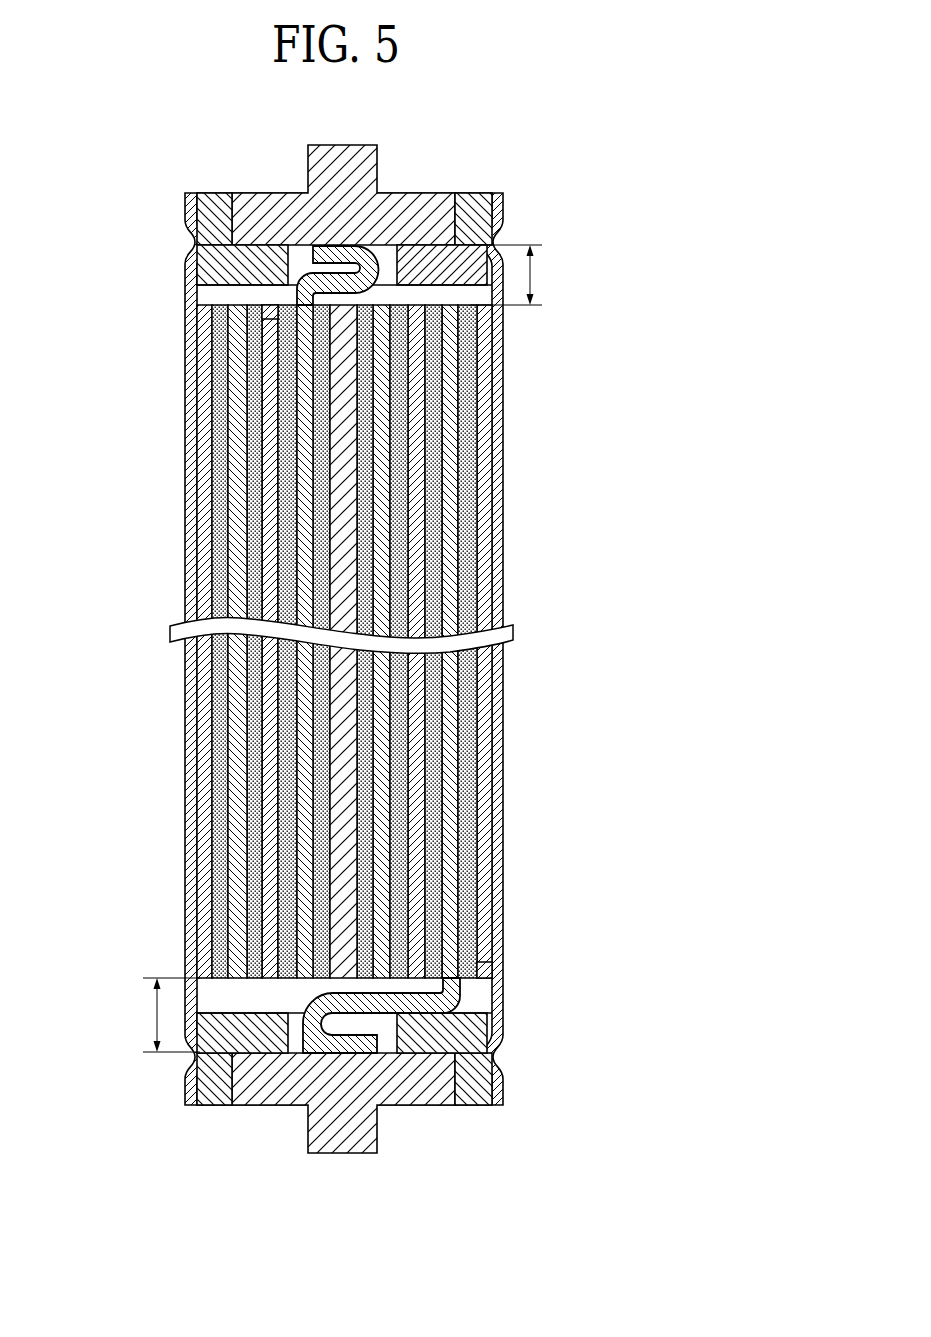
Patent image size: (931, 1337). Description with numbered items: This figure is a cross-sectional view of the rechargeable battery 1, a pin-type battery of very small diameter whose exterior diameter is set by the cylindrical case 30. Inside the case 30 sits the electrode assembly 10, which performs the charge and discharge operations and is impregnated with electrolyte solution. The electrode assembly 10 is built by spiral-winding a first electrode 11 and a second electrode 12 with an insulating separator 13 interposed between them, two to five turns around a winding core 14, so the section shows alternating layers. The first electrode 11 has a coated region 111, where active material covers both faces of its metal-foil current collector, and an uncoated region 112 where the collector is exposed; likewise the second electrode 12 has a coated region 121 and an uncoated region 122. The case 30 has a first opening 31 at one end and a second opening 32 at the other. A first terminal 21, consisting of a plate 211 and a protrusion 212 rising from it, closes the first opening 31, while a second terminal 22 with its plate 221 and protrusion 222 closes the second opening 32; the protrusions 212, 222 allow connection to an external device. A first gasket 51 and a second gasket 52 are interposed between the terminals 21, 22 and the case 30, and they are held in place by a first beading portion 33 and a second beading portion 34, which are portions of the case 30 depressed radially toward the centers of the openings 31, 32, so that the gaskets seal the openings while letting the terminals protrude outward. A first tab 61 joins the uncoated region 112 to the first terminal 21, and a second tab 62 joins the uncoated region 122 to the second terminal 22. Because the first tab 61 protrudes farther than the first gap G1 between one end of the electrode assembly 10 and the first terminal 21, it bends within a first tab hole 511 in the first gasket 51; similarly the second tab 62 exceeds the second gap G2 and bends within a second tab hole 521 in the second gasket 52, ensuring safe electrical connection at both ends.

The rechargeable battery 1 is at (377, 94).
The electrode assembly 10 is at (343, 649).
The first electrode 11 is at (300, 778).
The coated region 111 is at (350, 850).
The uncoated region 112 is at (273, 300).
The second electrode 12 is at (447, 383).
The coated region 121 is at (415, 480).
The uncoated region 122 is at (458, 995).
The separator 13 is at (405, 935).
The winding core 14 is at (343, 677).
The first terminal 21 is at (355, 161).
The plate 211 is at (420, 223).
The protrusion 212 is at (370, 152).
The second terminal 22 is at (355, 1141).
The plate 221 is at (417, 1080).
The protrusion 222 is at (368, 1150).
The case 30 is at (186, 729).
The first opening 31 is at (197, 200).
The second opening 32 is at (203, 1093).
The first beading portion 33 is at (500, 238).
The second beading portion 34 is at (497, 1056).
The first gasket 51 is at (216, 212).
The first tab hole 511 is at (300, 274).
The second gasket 52 is at (220, 1073).
The second tab hole 521 is at (400, 1017).
The first tab 61 is at (328, 258).
The second tab 62 is at (327, 1040).
The first gap G1 is at (516, 275).
The second gap G2 is at (161, 1015).